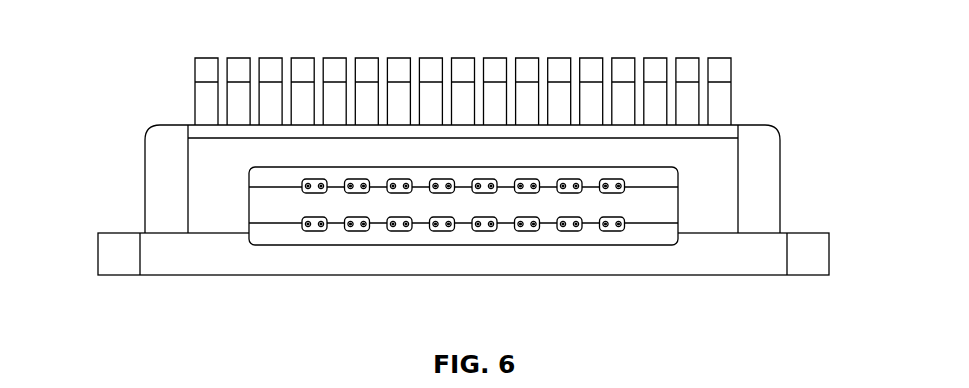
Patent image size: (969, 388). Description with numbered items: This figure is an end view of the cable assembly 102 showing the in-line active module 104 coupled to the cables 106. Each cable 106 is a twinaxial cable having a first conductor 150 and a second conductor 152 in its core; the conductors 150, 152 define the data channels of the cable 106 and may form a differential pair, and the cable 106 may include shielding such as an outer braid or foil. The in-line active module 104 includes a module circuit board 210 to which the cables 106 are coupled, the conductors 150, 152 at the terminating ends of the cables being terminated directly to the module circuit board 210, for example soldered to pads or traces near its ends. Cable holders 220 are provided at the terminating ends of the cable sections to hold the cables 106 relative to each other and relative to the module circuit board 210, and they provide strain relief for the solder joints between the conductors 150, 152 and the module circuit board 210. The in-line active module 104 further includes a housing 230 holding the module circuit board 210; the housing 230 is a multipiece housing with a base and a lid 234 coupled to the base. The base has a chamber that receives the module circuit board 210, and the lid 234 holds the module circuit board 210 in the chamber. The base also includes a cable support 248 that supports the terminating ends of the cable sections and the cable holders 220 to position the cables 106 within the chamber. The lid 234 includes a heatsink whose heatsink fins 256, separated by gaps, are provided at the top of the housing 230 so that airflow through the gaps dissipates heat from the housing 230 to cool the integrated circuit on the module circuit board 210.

The cable assembly 102 is at (806, 78).
The in-line active module 104 is at (133, 65).
The heatsink fins 256 is at (305, 72).
The lid 234 is at (167, 125).
The housing 230 is at (336, 294).
The module circuit board 210 is at (662, 207).
The cable holders 220 is at (292, 245).
The second cable support 248 is at (470, 240).
The cable 106 is at (628, 226).
The first conductor 150 is at (605, 229).
The second conductor 152 is at (619, 229).